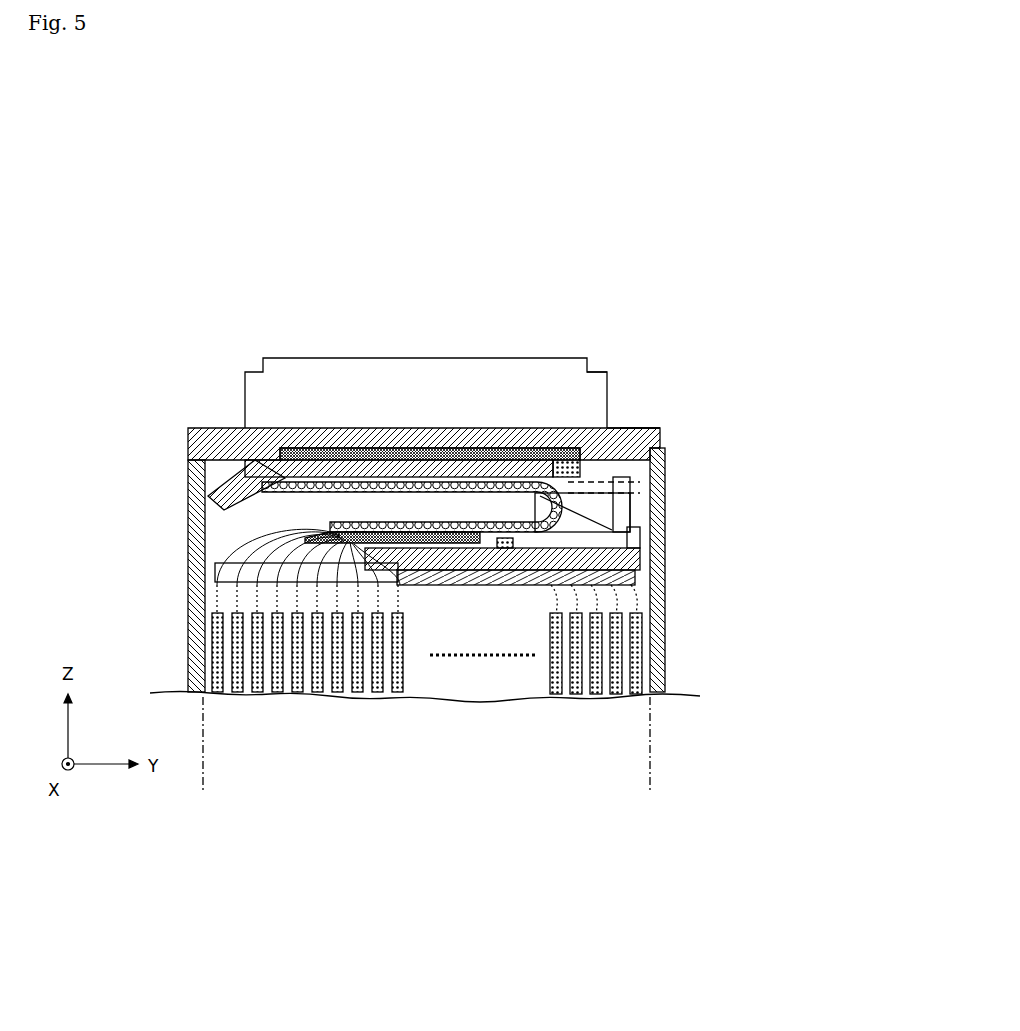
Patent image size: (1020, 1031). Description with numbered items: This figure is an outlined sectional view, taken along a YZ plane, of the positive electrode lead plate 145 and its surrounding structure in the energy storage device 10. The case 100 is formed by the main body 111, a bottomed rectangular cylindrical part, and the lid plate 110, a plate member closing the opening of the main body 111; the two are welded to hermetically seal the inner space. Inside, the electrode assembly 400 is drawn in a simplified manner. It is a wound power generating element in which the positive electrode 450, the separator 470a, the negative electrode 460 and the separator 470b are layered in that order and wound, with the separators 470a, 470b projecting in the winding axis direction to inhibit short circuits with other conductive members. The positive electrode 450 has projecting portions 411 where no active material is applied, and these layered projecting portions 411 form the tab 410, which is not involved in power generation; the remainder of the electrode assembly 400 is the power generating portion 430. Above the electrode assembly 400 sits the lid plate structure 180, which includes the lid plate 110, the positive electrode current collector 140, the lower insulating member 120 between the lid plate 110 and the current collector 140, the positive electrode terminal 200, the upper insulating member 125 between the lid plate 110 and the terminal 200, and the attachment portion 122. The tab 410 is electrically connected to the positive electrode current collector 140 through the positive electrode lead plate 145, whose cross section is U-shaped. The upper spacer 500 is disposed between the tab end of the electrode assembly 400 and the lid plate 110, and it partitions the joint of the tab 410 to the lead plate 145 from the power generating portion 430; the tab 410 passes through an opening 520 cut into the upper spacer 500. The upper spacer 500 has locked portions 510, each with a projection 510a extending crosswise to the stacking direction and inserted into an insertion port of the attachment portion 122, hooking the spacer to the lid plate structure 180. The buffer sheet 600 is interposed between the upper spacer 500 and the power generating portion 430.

The energy storage device 10 is at (696, 288).
The case 100 is at (95, 383).
The lid plate 110 is at (205, 430).
The main body 111 is at (205, 462).
The lower insulating member 120 is at (216, 428).
The attachment portion 122 is at (650, 432).
The upper insulating member 125 is at (606, 370).
The positive electrode current collector 140 is at (300, 450).
The positive electrode lead plate 145 is at (392, 470).
The lid plate structure 180 is at (697, 416).
The positive electrode terminal 200 is at (480, 358).
The electrode assembly 400 is at (650, 790).
The tab 410 is at (235, 532).
The projecting portions 411 is at (207, 548).
The power generating portion 430 is at (504, 633).
The positive electrode 450 is at (238, 695).
The negative electrode 460 is at (216, 697).
The separator 470a is at (207, 602).
The separator 470b is at (207, 572).
The upper spacer 500 is at (652, 536).
The locked portions 510 is at (668, 480).
The projection 510a is at (657, 570).
The openings 520 is at (306, 526).
The buffer sheet 600 is at (655, 588).